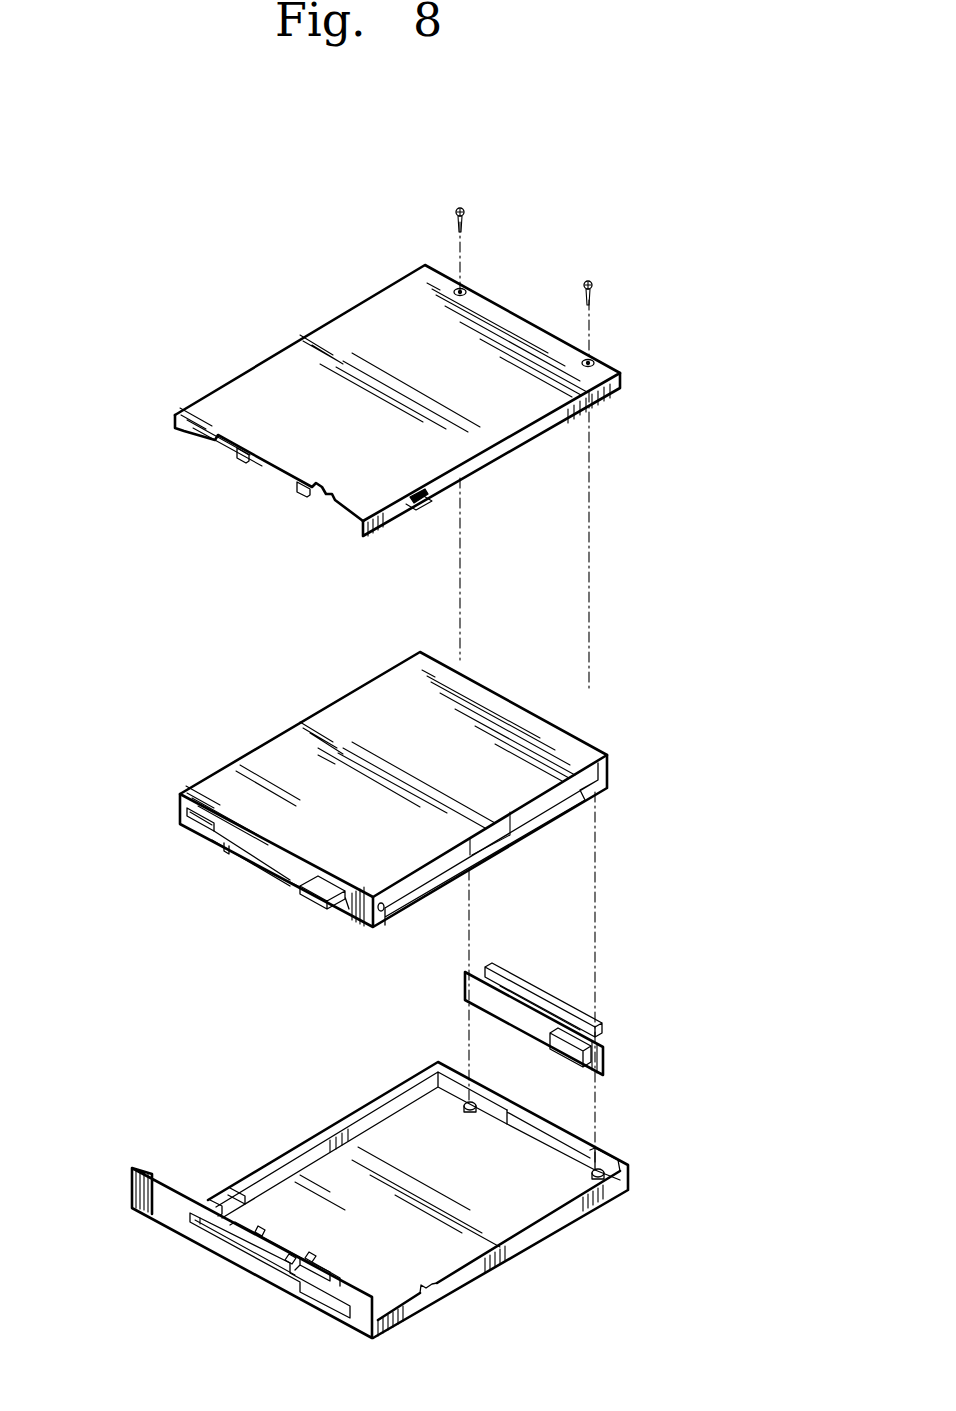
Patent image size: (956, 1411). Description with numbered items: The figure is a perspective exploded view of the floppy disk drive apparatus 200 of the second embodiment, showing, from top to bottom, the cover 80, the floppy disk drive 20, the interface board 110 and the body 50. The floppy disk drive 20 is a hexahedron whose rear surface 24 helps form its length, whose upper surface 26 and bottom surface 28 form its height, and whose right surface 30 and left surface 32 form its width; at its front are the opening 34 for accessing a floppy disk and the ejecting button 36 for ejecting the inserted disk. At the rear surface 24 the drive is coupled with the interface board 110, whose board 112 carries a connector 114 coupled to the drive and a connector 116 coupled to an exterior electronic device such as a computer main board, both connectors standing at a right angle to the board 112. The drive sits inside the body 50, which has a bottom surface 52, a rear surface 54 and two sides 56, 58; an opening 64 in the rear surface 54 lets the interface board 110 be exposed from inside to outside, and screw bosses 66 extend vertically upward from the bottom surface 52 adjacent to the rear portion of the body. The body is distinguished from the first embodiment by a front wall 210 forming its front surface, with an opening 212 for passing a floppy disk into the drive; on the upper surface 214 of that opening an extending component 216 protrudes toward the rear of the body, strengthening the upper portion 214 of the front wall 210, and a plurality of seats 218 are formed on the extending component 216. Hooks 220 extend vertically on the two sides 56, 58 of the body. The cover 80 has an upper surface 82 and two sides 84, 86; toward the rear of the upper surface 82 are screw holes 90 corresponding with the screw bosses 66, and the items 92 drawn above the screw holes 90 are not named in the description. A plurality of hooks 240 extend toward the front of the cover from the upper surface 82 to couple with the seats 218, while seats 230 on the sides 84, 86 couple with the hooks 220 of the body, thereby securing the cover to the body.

The floppy disk drive apparatus 200 is at (257, 186).
The cover 80 is at (205, 367).
The upper surface 82 is at (282, 372).
The side 84 is at (555, 420).
The side 86 is at (338, 318).
The screw holes 90 is at (466, 290).
The screw 92 is at (462, 212).
The hooks 240 is at (300, 490).
The seats 230 is at (430, 497).
The floppy disk drive 20 is at (217, 757).
The rear surface 24 is at (555, 720).
The upper surface 26 is at (360, 705).
The bottom surface 28 is at (200, 838).
The right surface 30 is at (555, 803).
The left surface 32 is at (300, 730).
The opening 34 is at (258, 855).
The ejecting button 36 is at (310, 890).
The interface board 110 is at (462, 990).
The board 112 is at (596, 1060).
The connector 114 is at (592, 1065).
The connector 116 is at (525, 965).
The body 50 is at (287, 1122).
The bottom surface 52 is at (510, 1220).
The rear surface 54 is at (601, 1127).
The side 56 is at (470, 1280).
The side 58 is at (355, 1105).
The opening 64 is at (548, 1135).
The screw bosses 66 is at (598, 1176).
The front wall 210 is at (150, 1200).
The opening 212 is at (245, 1252).
The upper surface 214 is at (292, 1265).
The extending component 216 is at (318, 1265).
The seats 218 is at (292, 1258).
The hooks 220 is at (432, 1272).